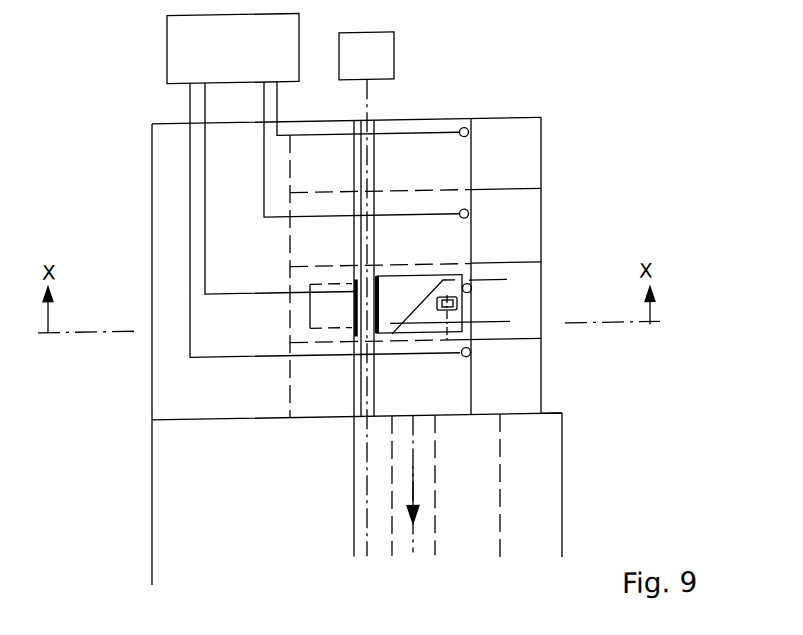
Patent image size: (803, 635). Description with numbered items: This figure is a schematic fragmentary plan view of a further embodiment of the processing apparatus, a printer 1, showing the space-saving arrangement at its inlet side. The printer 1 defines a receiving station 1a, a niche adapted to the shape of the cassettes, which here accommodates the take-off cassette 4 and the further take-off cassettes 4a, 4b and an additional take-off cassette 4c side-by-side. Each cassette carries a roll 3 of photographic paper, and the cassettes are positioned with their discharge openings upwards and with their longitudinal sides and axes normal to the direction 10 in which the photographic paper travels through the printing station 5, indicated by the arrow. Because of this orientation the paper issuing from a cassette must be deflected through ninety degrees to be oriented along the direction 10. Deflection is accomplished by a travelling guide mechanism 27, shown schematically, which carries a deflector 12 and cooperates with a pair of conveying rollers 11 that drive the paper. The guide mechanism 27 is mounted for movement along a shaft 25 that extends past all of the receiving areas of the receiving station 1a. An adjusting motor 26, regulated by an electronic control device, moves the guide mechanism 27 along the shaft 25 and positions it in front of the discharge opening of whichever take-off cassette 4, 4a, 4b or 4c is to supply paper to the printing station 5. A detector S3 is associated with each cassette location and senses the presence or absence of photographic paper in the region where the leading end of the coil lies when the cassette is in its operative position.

The printer 1 is at (168, 207).
The receiving station 1a is at (547, 410).
The roll 3 is at (507, 286).
The take-off cassette 4 is at (523, 396).
The take-off cassette 4a is at (541, 282).
The take-off cassette 4b is at (541, 217).
The additional take-off cassette 4c is at (533, 131).
The printing station 5 is at (487, 513).
The direction 10 is at (413, 491).
The conveying rollers 11 is at (460, 308).
The deflector 12 is at (398, 272).
The shaft 25 is at (373, 138).
The adjusting motor 26 is at (383, 42).
The travelling guide mechanism 27 is at (337, 333).
The detector S3 is at (466, 136).